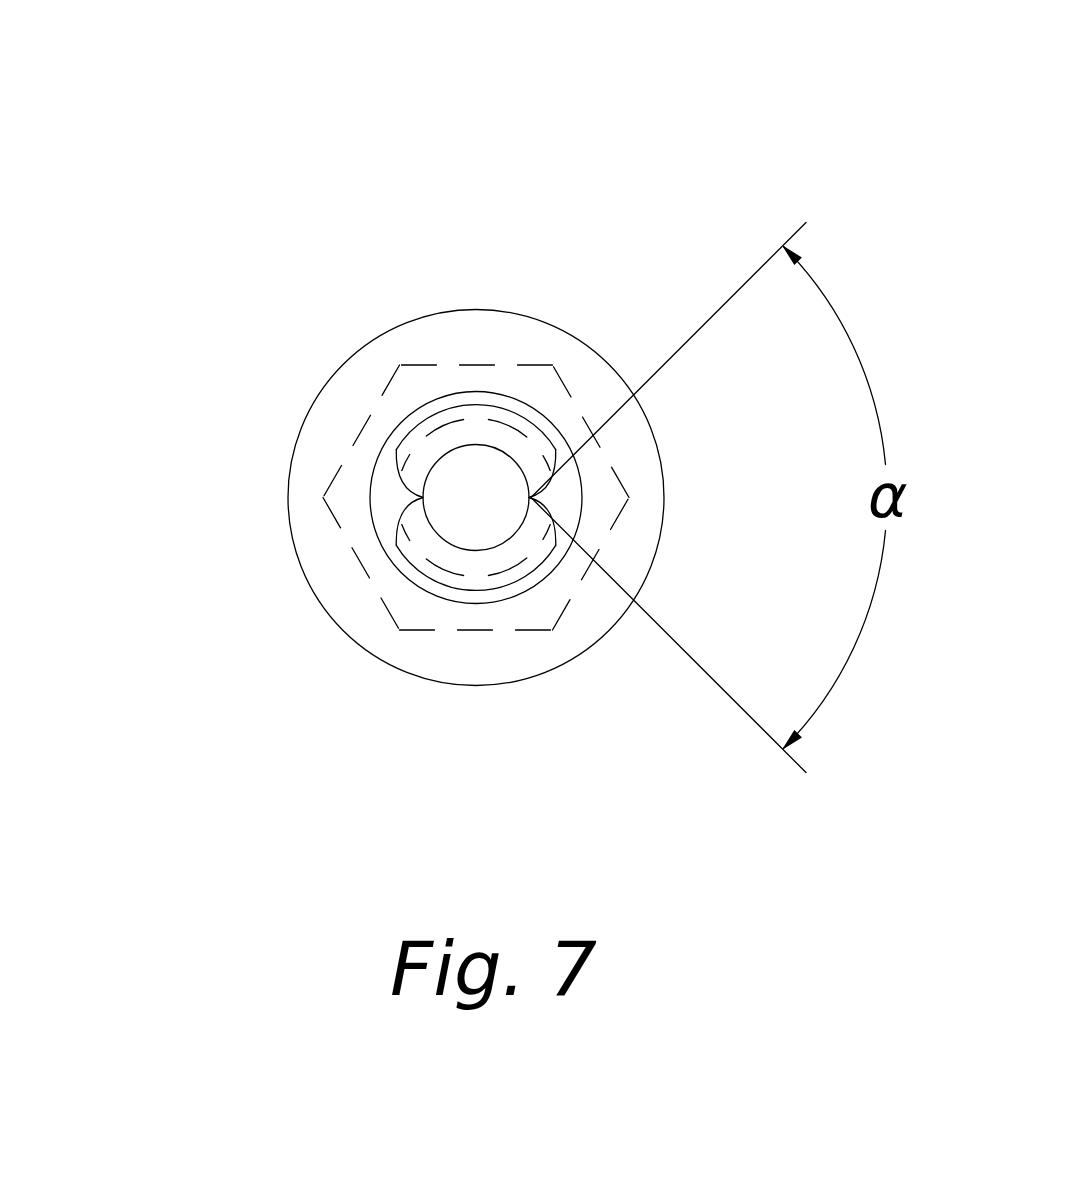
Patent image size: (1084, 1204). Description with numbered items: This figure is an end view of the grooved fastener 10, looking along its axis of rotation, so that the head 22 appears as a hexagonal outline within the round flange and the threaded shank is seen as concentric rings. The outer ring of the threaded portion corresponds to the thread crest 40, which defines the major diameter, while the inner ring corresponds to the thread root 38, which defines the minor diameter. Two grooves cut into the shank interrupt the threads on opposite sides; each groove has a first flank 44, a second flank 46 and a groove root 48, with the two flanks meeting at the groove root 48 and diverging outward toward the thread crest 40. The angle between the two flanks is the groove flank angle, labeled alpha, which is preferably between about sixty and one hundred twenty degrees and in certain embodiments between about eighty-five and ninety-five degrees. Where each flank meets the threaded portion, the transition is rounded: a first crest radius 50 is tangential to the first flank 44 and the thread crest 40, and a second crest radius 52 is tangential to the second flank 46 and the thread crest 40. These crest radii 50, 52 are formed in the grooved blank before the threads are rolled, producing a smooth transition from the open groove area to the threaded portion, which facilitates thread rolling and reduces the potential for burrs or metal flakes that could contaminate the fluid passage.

The fastener assembly 10 is at (538, 125).
The head 22 is at (478, 309).
The thread root 38 is at (503, 574).
The thread crest 40 is at (458, 591).
The first flank 44 is at (540, 489).
The second flank 46 is at (540, 506).
The groove root 48 is at (421, 495).
The first crest radius 50 is at (393, 538).
The second crest radius 52 is at (394, 457).